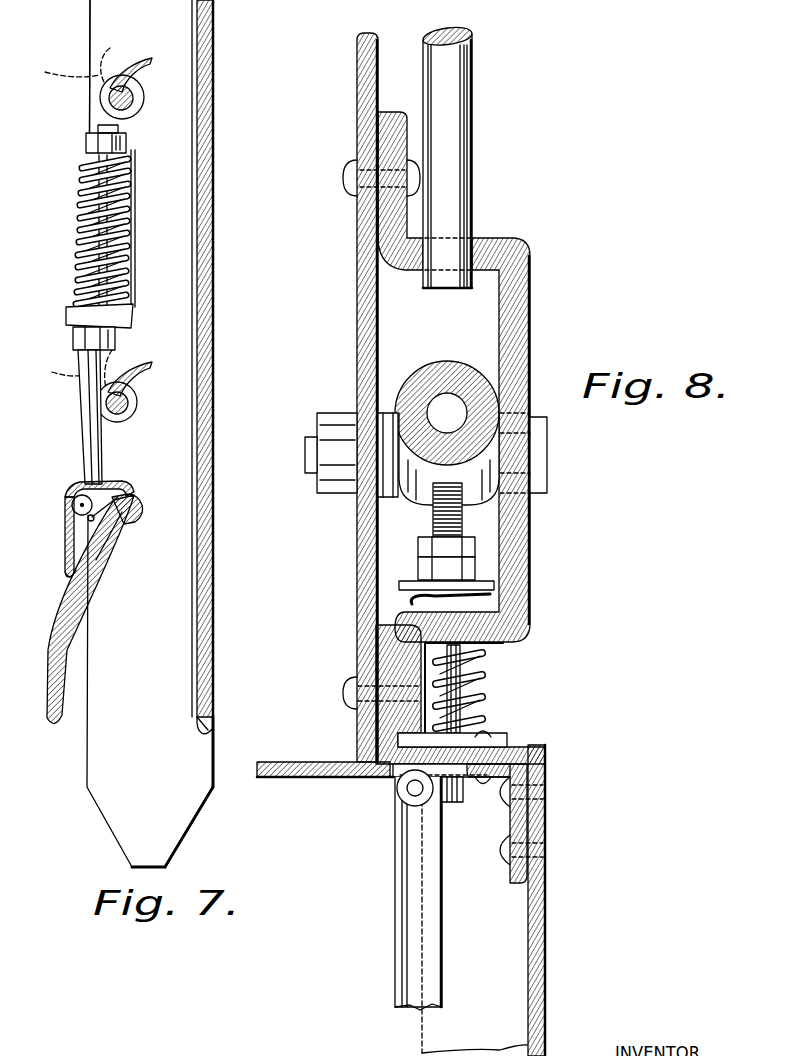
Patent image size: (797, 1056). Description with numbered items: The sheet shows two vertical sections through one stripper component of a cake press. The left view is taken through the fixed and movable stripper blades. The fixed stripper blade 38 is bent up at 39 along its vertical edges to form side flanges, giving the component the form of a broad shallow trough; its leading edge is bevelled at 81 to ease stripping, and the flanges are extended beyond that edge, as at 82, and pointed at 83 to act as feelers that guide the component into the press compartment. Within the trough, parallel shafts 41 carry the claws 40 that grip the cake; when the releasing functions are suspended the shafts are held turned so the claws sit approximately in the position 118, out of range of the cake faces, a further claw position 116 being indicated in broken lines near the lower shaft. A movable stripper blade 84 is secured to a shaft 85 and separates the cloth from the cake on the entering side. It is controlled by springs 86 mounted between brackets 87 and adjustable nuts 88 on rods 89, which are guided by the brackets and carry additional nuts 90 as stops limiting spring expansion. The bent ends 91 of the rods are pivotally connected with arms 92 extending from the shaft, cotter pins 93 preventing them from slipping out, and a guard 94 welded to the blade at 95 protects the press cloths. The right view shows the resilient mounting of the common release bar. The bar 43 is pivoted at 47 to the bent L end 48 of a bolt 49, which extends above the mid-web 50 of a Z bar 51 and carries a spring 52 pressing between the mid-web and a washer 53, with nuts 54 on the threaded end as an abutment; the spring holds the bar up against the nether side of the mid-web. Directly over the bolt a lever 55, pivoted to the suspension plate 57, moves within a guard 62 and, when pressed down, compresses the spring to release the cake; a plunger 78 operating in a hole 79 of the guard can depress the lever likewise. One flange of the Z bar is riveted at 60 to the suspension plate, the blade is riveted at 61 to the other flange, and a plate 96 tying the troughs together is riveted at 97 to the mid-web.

In FIG. 7, the blade 38 is at (213, 548).
In FIG. 8, the blade 38 is at (546, 942).
In FIG. 7, the side flanges 39 is at (99, 22).
In FIG. 7, the claws 40 is at (136, 218).
In FIG. 7, the parallel shafts 41 is at (131, 103).
In FIG. 8, the bar 43 is at (398, 905).
In FIG. 8, the pivot 47 is at (410, 790).
In FIG. 8, the bent or L end 48 is at (455, 802).
In FIG. 8, the bolt 49 is at (460, 700).
In FIG. 8, the mid-web 50 is at (490, 735).
In FIG. 8, the Z bar 51 is at (520, 822).
In FIG. 8, the spring 52 is at (478, 672).
In FIG. 8, the washer 53 is at (492, 586).
In FIG. 8, the nuts 54 is at (477, 566).
In FIG. 8, the lever 55 is at (470, 380).
In FIG. 8, the suspension plate 57 is at (360, 330).
In FIG. 8, the rivet securing point 60 is at (358, 692).
In FIG. 8, the rivet securing point 61 is at (505, 792).
In FIG. 8, the guard 62 is at (520, 325).
In FIG. 8, the plunger 78 is at (472, 88).
In FIG. 8, the hole 79 is at (476, 258).
In FIG. 7, the bevelled leading edge 81 is at (205, 730).
In FIG. 7, the extended flange portions 82 is at (108, 760).
In FIG. 7, the pointed ends 83 is at (182, 845).
In FIG. 7, the movable stripper blade 84 is at (60, 620).
In FIG. 7, the shaft 85 is at (132, 510).
In FIG. 7, the springs 86 is at (84, 202).
In FIG. 7, the brackets 87 is at (66, 313).
In FIG. 7, the adjustable nuts 88 is at (86, 140).
In FIG. 7, the rods 89 is at (80, 410).
In FIG. 7, the nuts 90 is at (73, 337).
In FIG. 7, the bent ends 91 is at (76, 505).
In FIG. 7, the arms 92 is at (92, 517).
In FIG. 7, the cotter pins 93 is at (104, 553).
In FIG. 7, the guard 94 is at (68, 540).
In FIG. 7, the weld 95 is at (66, 577).
In FIG. 8, the plate 96 is at (296, 770).
In FIG. 8, the rivet securing point 97 is at (535, 767).
In FIG. 7, the dashed line 116 is at (62, 369).
In FIG. 7, the claw position 118 is at (72, 65).